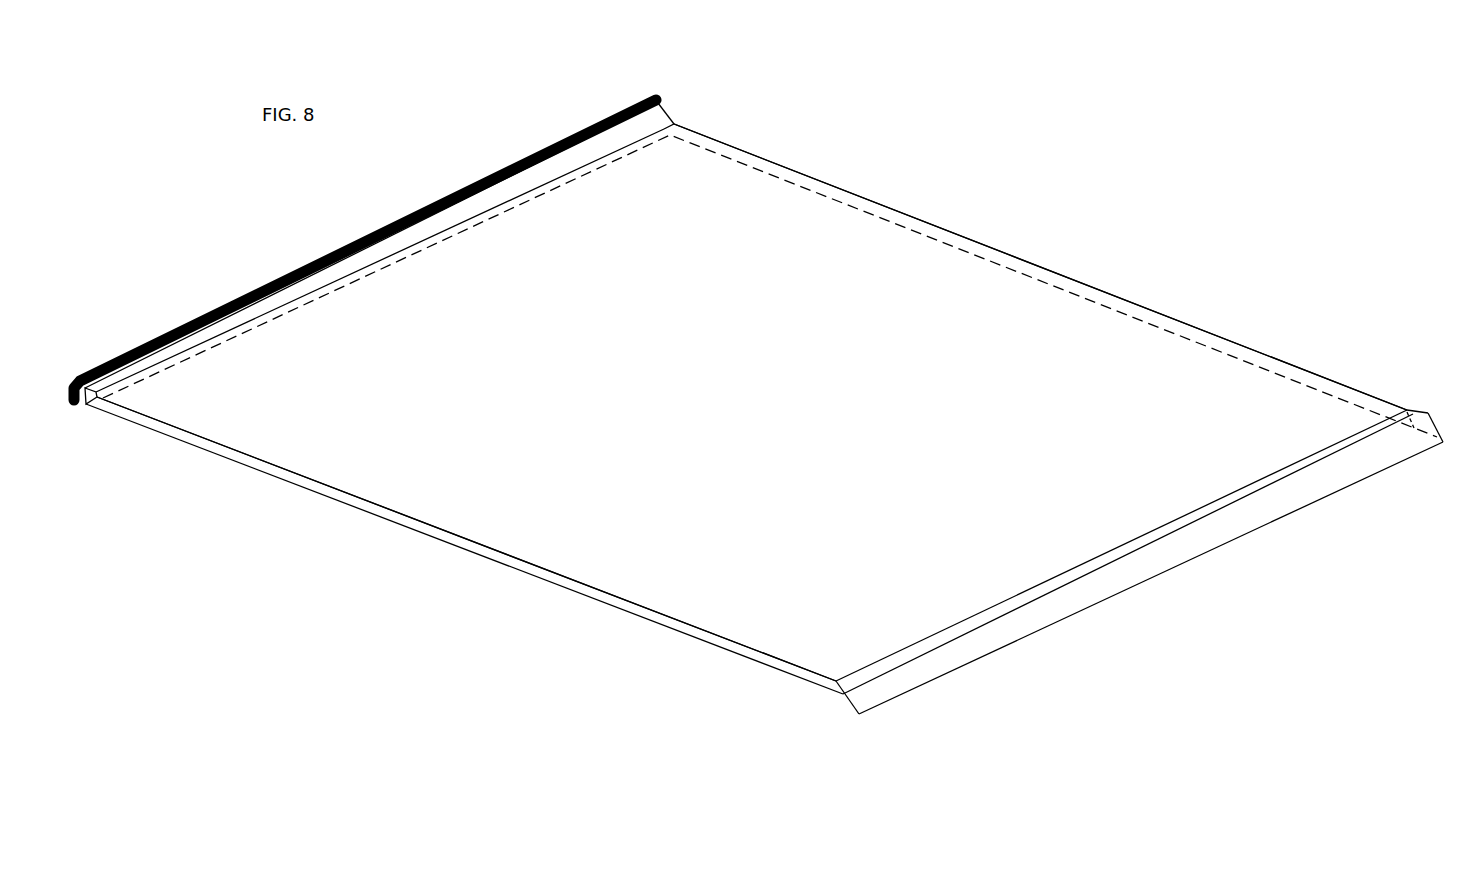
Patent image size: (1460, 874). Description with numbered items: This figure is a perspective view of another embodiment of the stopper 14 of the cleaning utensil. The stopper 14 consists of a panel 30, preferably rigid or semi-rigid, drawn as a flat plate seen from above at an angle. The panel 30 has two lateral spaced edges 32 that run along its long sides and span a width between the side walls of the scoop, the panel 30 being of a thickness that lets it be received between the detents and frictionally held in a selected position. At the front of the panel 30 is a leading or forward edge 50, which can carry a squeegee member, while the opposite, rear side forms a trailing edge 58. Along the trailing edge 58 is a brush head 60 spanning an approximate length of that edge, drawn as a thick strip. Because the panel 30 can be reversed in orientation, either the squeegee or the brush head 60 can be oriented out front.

The stopper 14 is at (674, 127).
The panel 30 is at (705, 590).
The lateral spaced edges 32 is at (1068, 277).
The leading edge 50 is at (843, 696).
The trailing edge 58 is at (95, 401).
The brush head 60 is at (400, 222).